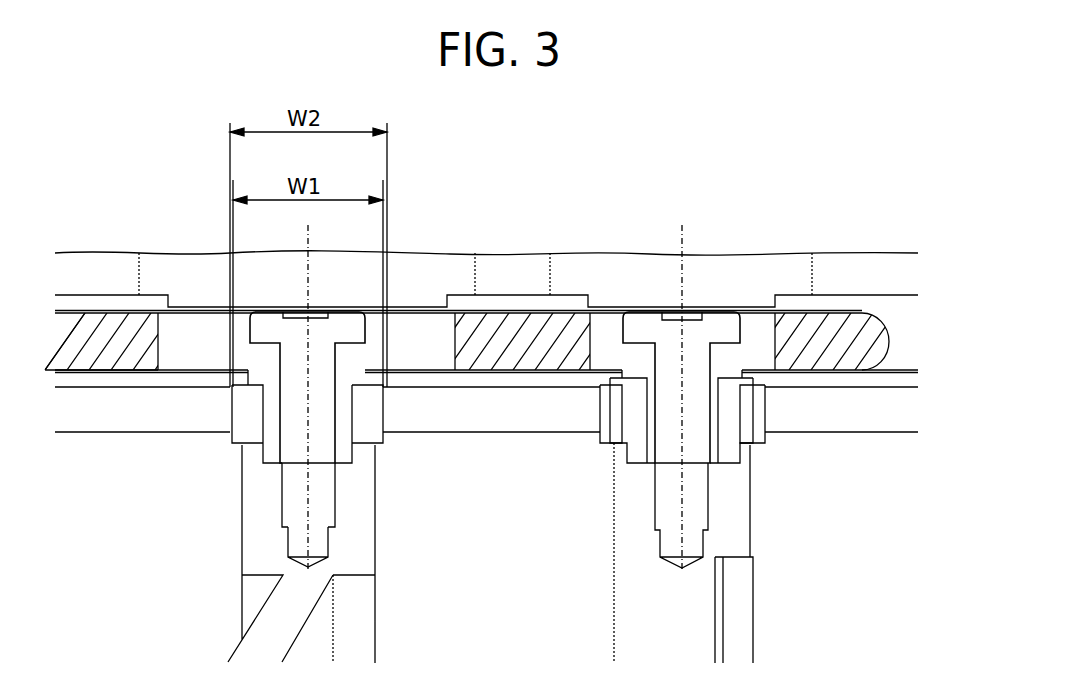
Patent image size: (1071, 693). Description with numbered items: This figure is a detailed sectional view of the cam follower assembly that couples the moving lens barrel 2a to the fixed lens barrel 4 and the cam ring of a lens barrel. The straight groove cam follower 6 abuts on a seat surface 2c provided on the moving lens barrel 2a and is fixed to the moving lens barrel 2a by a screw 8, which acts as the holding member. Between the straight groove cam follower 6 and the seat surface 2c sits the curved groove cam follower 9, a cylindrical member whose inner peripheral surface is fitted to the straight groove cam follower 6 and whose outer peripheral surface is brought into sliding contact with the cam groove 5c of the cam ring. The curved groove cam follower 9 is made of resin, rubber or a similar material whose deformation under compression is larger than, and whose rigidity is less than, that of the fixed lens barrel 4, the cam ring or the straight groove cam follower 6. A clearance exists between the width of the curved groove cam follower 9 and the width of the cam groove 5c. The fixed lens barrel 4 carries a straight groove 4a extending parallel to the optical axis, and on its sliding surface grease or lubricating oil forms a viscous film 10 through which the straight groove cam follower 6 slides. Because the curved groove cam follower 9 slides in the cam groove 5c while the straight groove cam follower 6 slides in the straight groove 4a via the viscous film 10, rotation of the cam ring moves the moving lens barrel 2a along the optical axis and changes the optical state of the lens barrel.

The fixed lens barrel 4 is at (82, 265).
The straight groove 4a is at (900, 337).
The straight groove cam follower 6 is at (185, 310).
The screw 8 is at (278, 322).
The viscous film 10 is at (842, 318).
The curved groove cam follower 9 is at (240, 443).
The cam groove 5c is at (383, 447).
The seat surface 2c is at (335, 463).
The moving lens barrel 2a is at (258, 565).